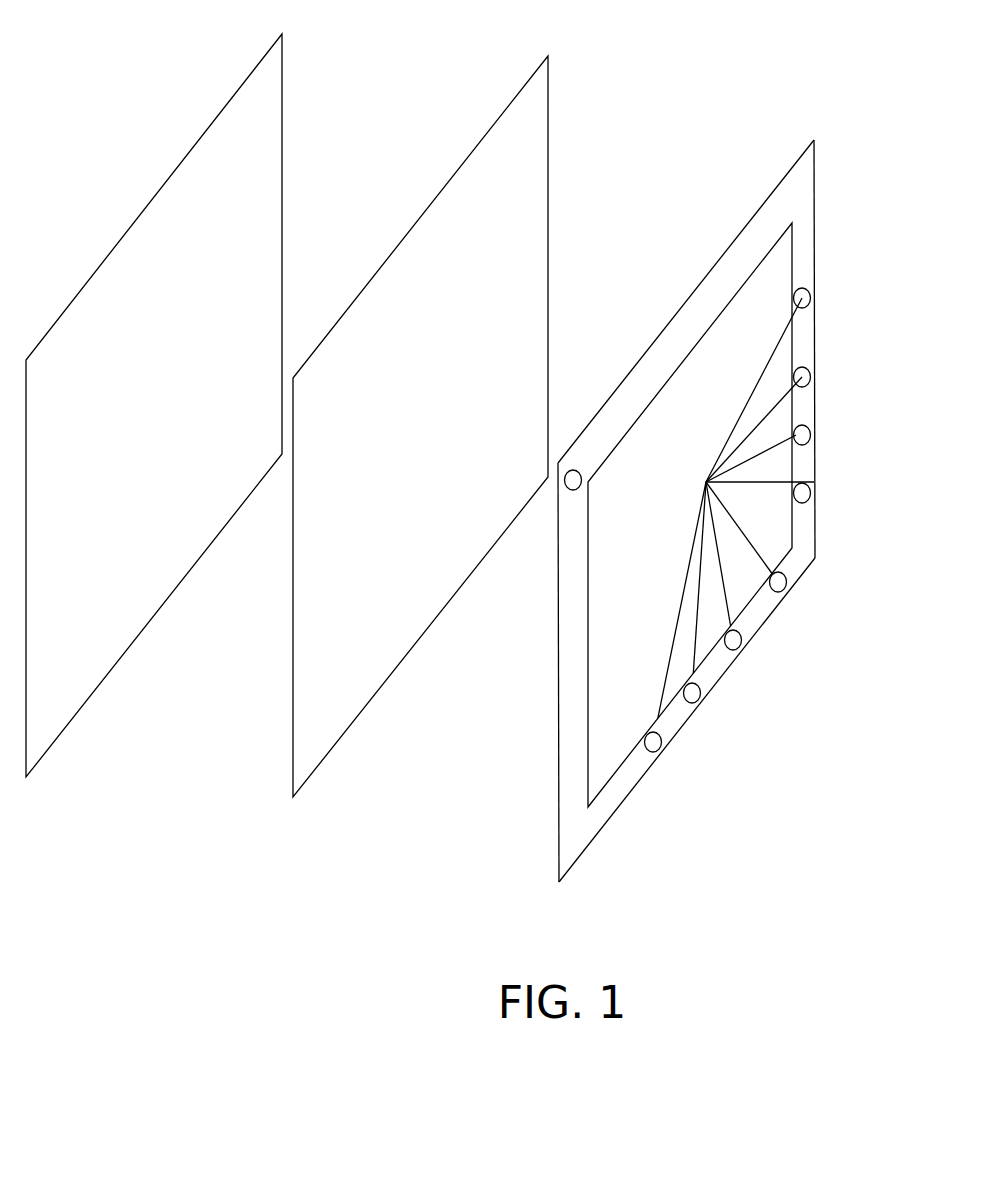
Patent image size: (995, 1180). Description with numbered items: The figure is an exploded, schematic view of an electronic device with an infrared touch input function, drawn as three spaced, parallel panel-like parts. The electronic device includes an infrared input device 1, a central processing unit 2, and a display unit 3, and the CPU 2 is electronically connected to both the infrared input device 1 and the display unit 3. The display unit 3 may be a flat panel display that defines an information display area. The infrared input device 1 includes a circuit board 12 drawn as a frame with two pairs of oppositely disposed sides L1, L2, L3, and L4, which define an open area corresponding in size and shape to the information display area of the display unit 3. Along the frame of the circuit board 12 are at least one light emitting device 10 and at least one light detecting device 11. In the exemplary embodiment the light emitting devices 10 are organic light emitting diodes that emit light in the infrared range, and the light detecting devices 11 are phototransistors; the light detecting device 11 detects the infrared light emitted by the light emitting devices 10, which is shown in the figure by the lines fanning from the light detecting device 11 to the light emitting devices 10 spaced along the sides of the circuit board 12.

The infrared input device 1 is at (641, 470).
The central processing unit 2 is at (148, 153).
The display unit 3 is at (423, 182).
The light emitting device 10 is at (573, 490).
The light detecting device 11 is at (733, 508).
The circuit board 12 is at (555, 662).
The side L1 is at (570, 793).
The side L2 is at (613, 785).
The side L3 is at (730, 270).
The side L4 is at (800, 253).